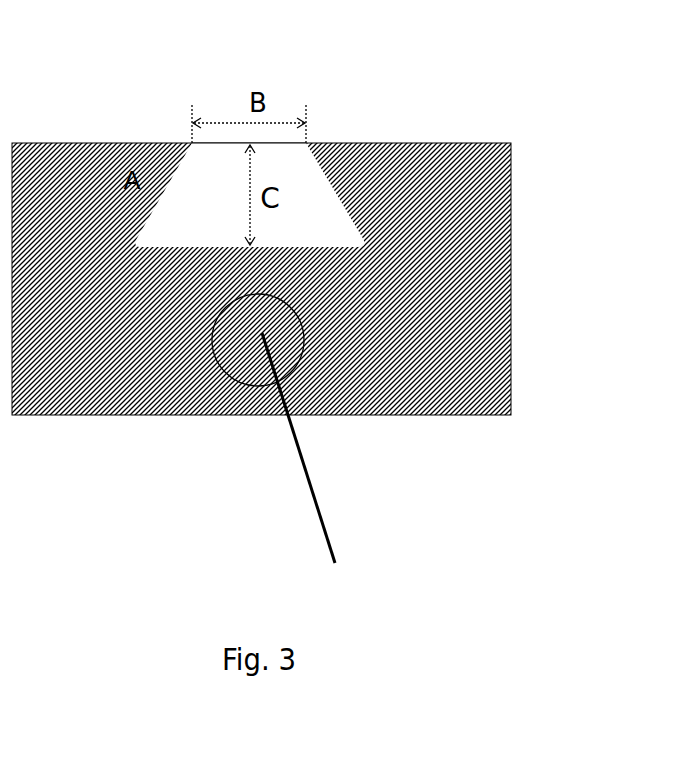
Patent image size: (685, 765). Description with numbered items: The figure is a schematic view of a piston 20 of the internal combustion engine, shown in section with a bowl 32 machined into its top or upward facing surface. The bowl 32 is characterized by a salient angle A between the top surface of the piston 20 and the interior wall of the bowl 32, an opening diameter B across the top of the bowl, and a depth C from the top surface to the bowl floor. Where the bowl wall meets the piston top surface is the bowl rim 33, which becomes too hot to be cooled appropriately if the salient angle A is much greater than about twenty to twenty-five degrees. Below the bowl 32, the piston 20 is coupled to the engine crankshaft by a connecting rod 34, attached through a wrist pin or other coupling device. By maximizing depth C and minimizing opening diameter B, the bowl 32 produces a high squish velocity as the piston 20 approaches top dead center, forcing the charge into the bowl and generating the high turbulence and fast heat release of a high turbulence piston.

The piston 20 is at (482, 285).
The bowl 32 is at (312, 197).
The bowl rim 33 is at (192, 143).
The connecting rod 34 is at (312, 492).